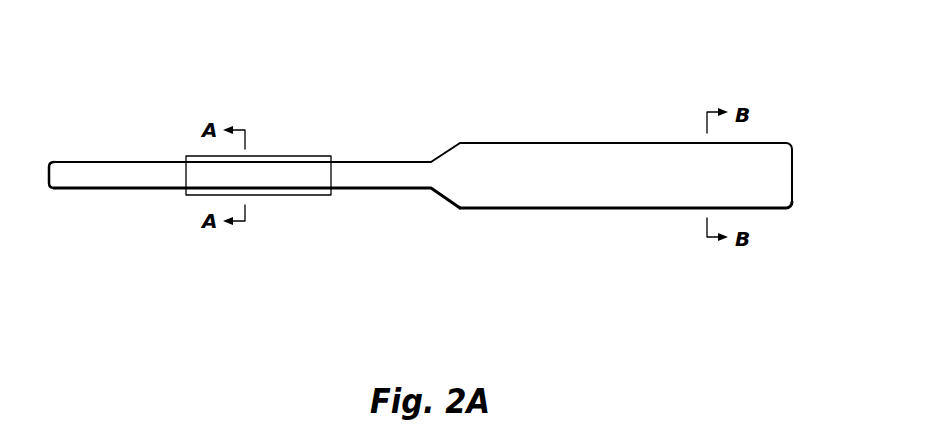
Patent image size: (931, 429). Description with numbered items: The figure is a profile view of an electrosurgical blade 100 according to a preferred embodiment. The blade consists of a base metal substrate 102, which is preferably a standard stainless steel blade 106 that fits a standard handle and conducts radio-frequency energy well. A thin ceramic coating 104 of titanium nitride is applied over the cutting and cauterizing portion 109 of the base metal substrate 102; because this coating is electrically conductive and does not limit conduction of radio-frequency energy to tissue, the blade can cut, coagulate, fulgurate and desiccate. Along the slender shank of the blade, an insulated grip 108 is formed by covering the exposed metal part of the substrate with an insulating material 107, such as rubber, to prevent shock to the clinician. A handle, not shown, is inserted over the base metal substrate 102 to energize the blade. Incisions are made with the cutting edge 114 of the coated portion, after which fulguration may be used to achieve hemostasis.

The electrosurgical blade 100 is at (404, 66).
The base metal substrate 102 is at (97, 175).
The ceramic coating 104 is at (512, 197).
The stainless steel blade 106 is at (793, 275).
The insulating material 107 is at (308, 179).
The insulated grip 108 is at (332, 113).
The cutting and cauterizing portion 109 is at (795, 100).
The cutting edge 114 is at (640, 210).